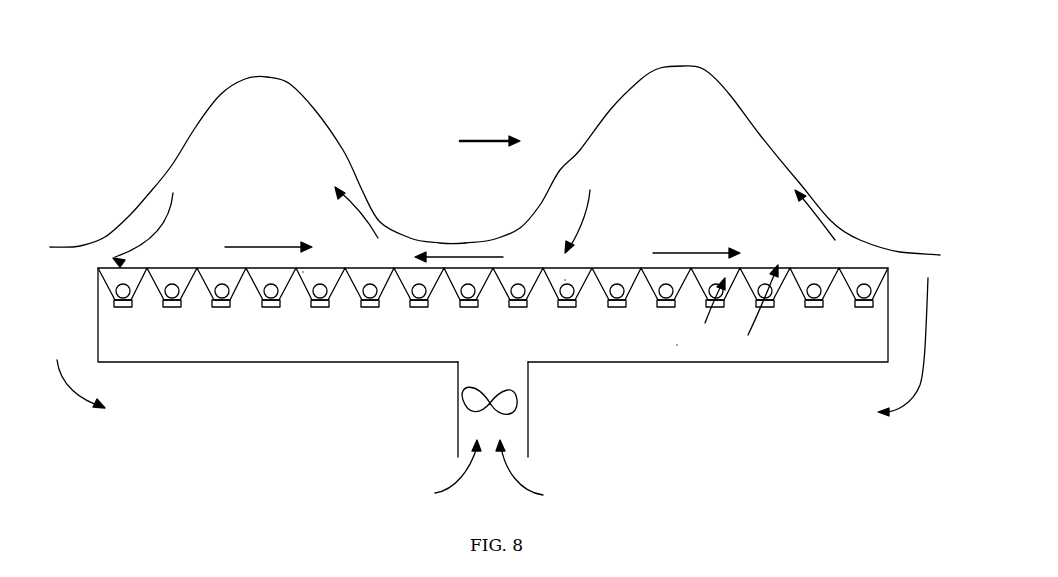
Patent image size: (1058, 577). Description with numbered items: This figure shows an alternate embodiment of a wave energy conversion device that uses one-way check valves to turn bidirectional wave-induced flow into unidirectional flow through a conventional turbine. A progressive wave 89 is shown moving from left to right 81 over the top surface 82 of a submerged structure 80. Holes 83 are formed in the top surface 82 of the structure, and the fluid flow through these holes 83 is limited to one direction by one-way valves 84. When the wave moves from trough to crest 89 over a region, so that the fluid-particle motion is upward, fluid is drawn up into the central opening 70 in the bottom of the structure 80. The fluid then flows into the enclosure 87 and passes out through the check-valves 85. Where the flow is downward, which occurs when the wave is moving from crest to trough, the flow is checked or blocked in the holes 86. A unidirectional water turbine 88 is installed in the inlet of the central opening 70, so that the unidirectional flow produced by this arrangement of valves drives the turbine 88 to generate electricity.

The central opening 70 is at (458, 427).
The submerged structure 80 is at (273, 428).
The wave direction 81 is at (490, 128).
The top surface 82 is at (363, 266).
The holes 83 is at (103, 270).
The one-way valves 84 is at (118, 302).
The check-valves 85 is at (303, 272).
The holes 86 is at (565, 280).
The enclosure 87 is at (677, 345).
The unidirectional water turbine 88 is at (505, 403).
The progressive wave 89 is at (275, 77).